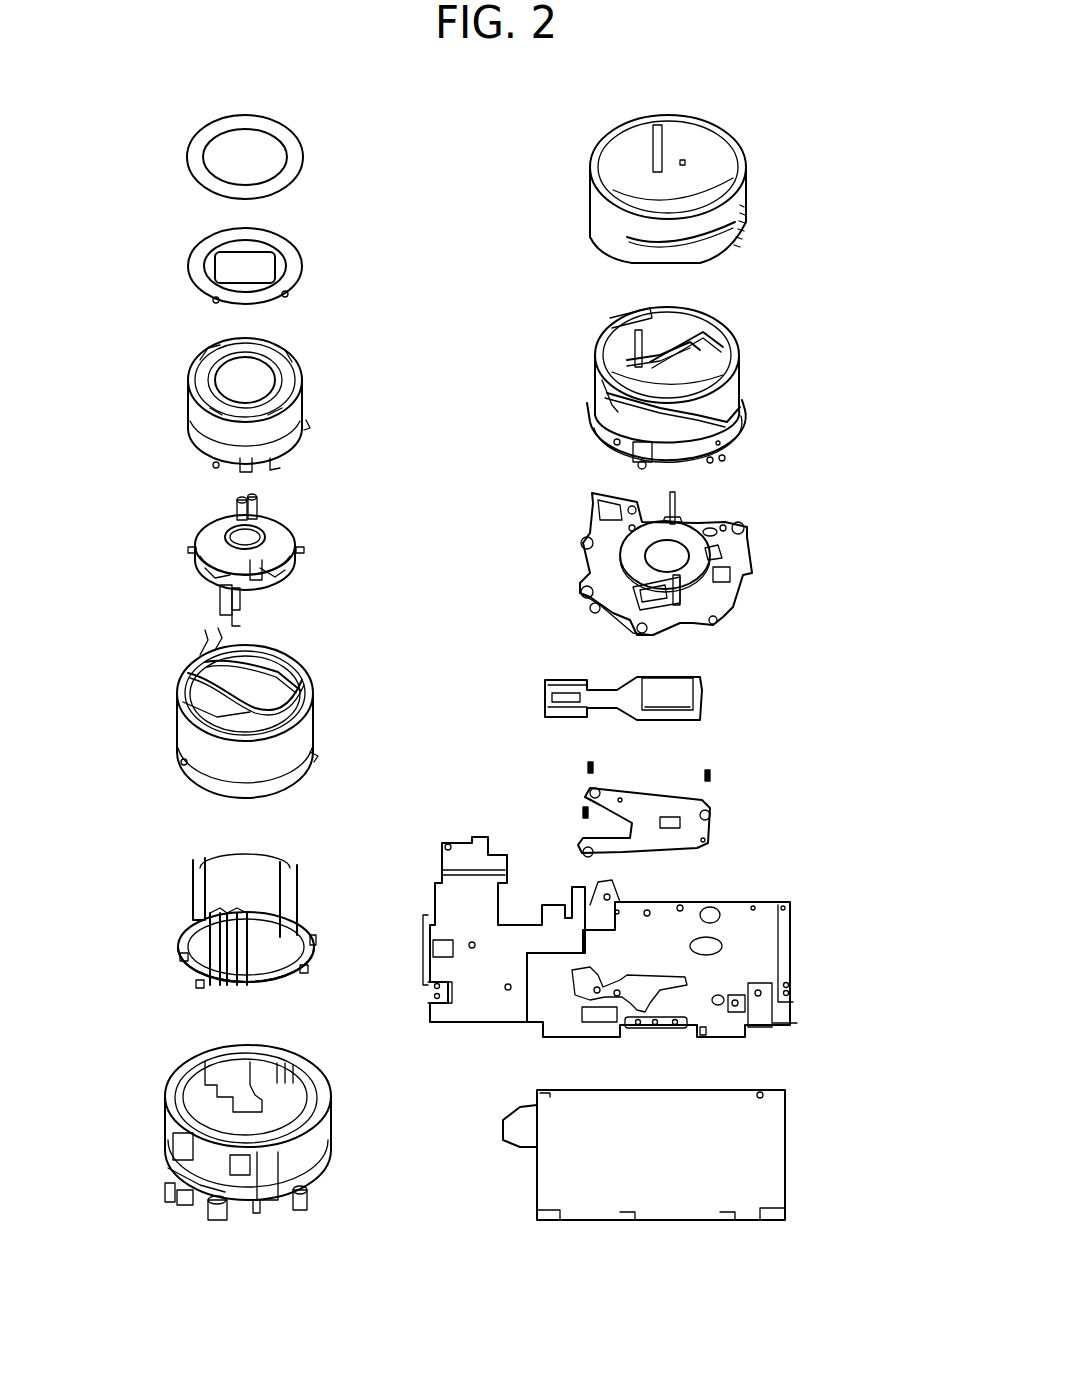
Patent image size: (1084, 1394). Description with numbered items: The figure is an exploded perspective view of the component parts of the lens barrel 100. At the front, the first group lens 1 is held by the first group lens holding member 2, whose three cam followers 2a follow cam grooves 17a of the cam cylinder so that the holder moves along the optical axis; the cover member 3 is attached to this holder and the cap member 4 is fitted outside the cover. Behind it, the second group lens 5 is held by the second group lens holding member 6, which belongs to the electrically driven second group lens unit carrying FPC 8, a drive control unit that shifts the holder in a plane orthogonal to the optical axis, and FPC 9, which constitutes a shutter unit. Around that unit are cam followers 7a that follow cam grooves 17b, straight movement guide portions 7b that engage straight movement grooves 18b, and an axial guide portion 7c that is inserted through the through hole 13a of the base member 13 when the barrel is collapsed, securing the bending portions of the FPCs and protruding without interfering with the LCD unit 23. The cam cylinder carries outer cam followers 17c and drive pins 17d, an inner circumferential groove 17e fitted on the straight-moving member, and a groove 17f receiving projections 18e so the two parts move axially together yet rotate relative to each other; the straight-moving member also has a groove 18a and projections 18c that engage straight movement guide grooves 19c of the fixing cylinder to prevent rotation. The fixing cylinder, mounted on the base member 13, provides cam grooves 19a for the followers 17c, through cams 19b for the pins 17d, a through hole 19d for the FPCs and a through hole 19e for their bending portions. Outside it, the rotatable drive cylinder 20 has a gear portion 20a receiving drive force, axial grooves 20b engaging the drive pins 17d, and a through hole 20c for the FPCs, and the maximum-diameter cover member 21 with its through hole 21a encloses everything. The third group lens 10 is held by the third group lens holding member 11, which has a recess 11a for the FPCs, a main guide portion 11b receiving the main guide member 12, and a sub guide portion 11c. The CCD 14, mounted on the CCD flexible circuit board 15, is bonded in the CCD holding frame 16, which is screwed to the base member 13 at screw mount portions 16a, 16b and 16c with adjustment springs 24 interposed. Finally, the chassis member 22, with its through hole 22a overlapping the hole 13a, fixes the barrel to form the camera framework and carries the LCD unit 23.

The lens barrel 100 is at (827, 152).
The cap member 4 is at (292, 150).
The cover member 3 is at (296, 262).
The first group lens 1 is at (262, 372).
The first group lens holding member 2 is at (250, 408).
The cam followers 2a is at (306, 422).
The second group lens 5 is at (203, 549).
The second group lens holding member 6 is at (265, 571).
The cam followers 7a is at (190, 550).
The straight movement guide portions 7b is at (300, 565).
The guide portion 7c is at (240, 617).
The FPC 8 is at (218, 620).
The FPC 9 is at (170, 607).
The cam grooves 17a is at (312, 680).
The cam grooves 17b is at (178, 692).
The cam followers 17c is at (202, 762).
The drive pins 17d is at (183, 773).
The groove 17e is at (308, 728).
The groove 17f is at (180, 668).
The groove 18a is at (187, 930).
The straight movement grooves 18b is at (203, 885).
The projections 18c is at (315, 950).
The projections 18e is at (180, 957).
The cover member 21 is at (312, 1070).
The through hole 21a is at (203, 1220).
The drive cylinder 20 is at (688, 197).
The gear portion 20a is at (748, 235).
The grooves 20b is at (665, 140).
The through hole 20c is at (712, 240).
The cam grooves 19a is at (713, 325).
The through cams 19b is at (693, 343).
The straight movement guide grooves 19c is at (630, 350).
The through hole 19d is at (620, 440).
The through hole 19e is at (632, 468).
The main guide member 12 is at (678, 495).
The third group lens 10 is at (667, 557).
The third group lens holding member 11 is at (698, 563).
The recess 11a is at (637, 603).
The main guide portion 11b is at (680, 520).
The sub guide portion 11c is at (720, 593).
The base member 13 is at (740, 548).
The through hole 13a is at (613, 623).
The CCD 14 is at (685, 693).
The CCD flexible circuit board 15 is at (602, 692).
The adjustment springs 24 is at (590, 808).
The CCD holding frame 16 is at (663, 813).
The screw mount portion 16a is at (590, 793).
The screw mount portion 16b is at (580, 843).
The screw mount portion 16c is at (713, 805).
The chassis member 22 is at (663, 932).
The through hole 22a is at (673, 1018).
The LCD unit 23 is at (750, 1152).